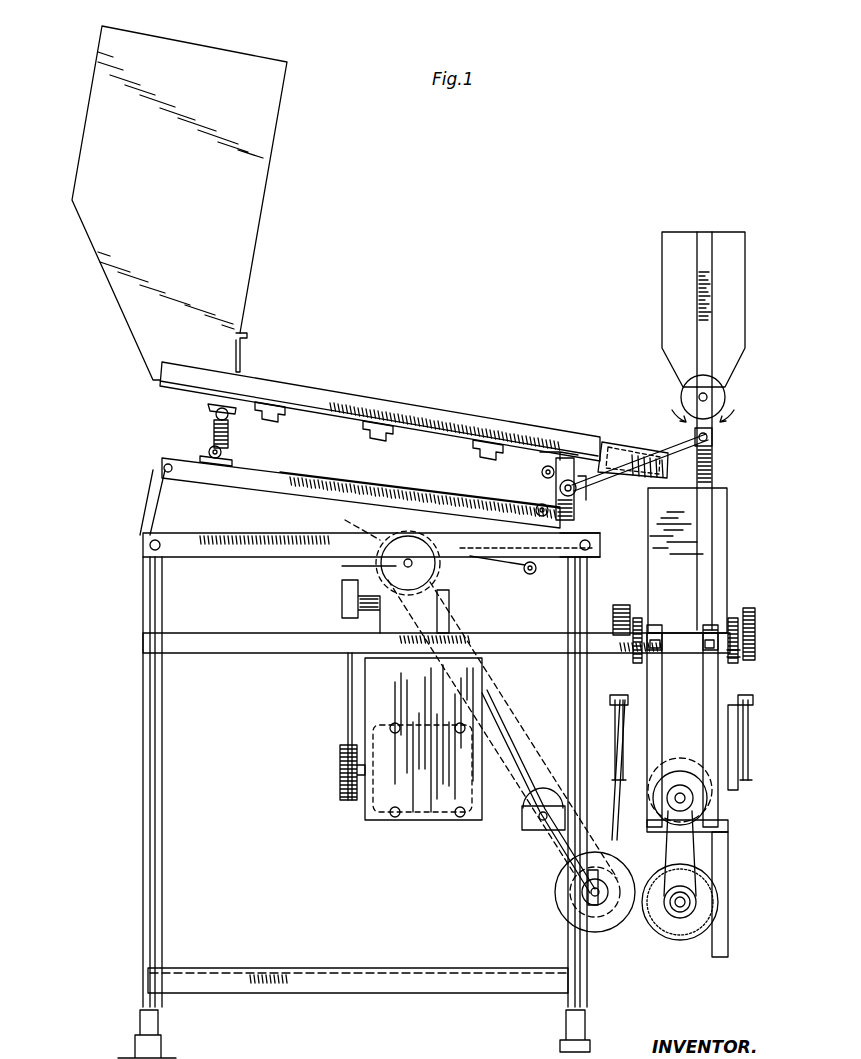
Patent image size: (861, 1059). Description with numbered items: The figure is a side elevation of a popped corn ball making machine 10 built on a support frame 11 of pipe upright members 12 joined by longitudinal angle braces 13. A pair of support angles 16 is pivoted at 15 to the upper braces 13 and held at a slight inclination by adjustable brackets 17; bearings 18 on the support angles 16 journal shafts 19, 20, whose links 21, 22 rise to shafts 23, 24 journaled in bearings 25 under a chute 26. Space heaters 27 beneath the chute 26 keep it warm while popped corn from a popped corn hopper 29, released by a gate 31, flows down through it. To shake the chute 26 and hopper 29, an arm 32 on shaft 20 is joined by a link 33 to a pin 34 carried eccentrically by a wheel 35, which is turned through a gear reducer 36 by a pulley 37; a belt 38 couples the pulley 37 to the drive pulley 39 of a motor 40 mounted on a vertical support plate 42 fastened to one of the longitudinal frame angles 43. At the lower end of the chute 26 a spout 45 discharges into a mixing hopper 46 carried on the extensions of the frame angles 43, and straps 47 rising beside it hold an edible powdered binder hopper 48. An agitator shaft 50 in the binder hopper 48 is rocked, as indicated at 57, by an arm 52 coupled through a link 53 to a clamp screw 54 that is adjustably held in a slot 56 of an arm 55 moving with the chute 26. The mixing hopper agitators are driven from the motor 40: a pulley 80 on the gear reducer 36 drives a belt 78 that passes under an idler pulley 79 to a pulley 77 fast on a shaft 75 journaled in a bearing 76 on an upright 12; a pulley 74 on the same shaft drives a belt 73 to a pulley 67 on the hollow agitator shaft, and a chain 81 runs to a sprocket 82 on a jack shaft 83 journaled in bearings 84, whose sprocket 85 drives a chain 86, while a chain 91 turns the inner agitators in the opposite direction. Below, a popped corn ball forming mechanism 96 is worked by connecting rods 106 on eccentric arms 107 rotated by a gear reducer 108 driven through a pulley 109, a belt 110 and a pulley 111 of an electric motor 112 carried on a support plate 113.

The popped corn ball making machine 10 is at (514, 209).
The support frame 11 is at (120, 755).
The upright members 12 is at (142, 862).
The longitudinal angle braces 13 is at (220, 548).
The pivot 15 is at (598, 540).
The support angles 16 is at (336, 488).
The adjustable brackets 17 is at (152, 502).
The bearings 18 is at (233, 460).
The shaft 19 is at (208, 449).
The shaft 20 is at (535, 507).
The links 21 is at (229, 432).
The links 22 is at (555, 480).
The shaft 23 is at (214, 411).
The shaft 24 is at (545, 462).
The bearings 25 is at (550, 464).
The chute 26 is at (390, 398).
The space heaters 27 is at (286, 420).
The popped corn hopper 29 is at (256, 209).
The gate 31 is at (244, 342).
The arm 32 is at (534, 573).
The link 33 is at (520, 570).
The pin 34 is at (471, 694).
The wheel 35 is at (340, 567).
The gear reducer 36 is at (432, 610).
The pulley 37 is at (341, 596).
The belt 38 is at (347, 699).
The drive pulley 39 is at (339, 779).
The motor 40 is at (418, 812).
The vertical support plate 42 is at (482, 675).
The longitudinal frame angles 43 is at (240, 653).
The spout 45 is at (616, 450).
The mixing hopper 46 is at (728, 503).
The straps 47 is at (714, 463).
The edible powdered binder hopper 48 is at (738, 282).
The shaft 50 is at (708, 395).
The arm 52 is at (714, 436).
The link 53 is at (663, 450).
The clamp screw 54 is at (577, 489).
The arm 55 is at (574, 509).
The slot 56 is at (603, 445).
The rocking movement 57 is at (678, 410).
The pulley 67 is at (615, 612).
The belt 73 is at (615, 838).
The pulley 74 is at (612, 920).
The shaft 75 is at (596, 925).
The bearing 76 is at (582, 895).
The pulley 77 is at (630, 915).
The belt 78 is at (522, 850).
The idler pulley 79 is at (542, 800).
The pulley 80 is at (438, 586).
The chain 81 is at (637, 616).
The sprocket 82 is at (652, 624).
The jack shaft 83 is at (680, 636).
The bearings 84 is at (660, 630).
The sprocket 85 is at (740, 656).
The chain 86 is at (733, 617).
The chain 91 is at (750, 609).
The popped corn ball forming mechanism 96 is at (741, 803).
The connecting rods 106 is at (614, 712).
The eccentric arms 107 is at (616, 730).
The gear reducer 108 is at (680, 735).
The pulley 109 is at (720, 828).
The belt 110 is at (700, 846).
The pulley 111 is at (690, 896).
The electric motor 112 is at (712, 903).
The support plate 113 is at (728, 920).